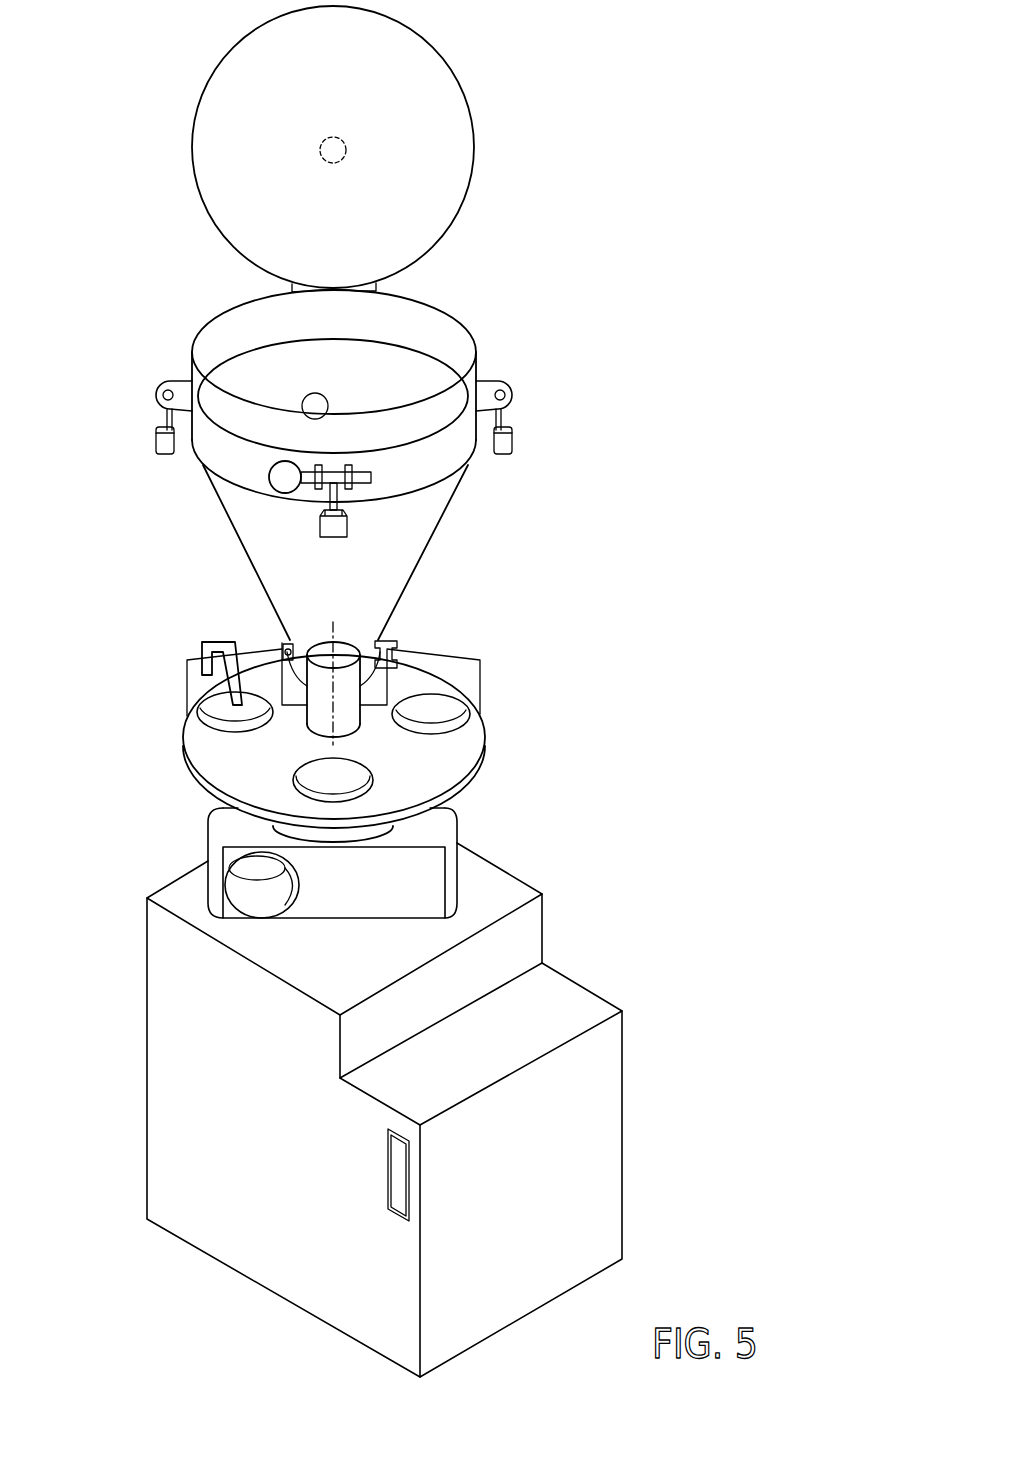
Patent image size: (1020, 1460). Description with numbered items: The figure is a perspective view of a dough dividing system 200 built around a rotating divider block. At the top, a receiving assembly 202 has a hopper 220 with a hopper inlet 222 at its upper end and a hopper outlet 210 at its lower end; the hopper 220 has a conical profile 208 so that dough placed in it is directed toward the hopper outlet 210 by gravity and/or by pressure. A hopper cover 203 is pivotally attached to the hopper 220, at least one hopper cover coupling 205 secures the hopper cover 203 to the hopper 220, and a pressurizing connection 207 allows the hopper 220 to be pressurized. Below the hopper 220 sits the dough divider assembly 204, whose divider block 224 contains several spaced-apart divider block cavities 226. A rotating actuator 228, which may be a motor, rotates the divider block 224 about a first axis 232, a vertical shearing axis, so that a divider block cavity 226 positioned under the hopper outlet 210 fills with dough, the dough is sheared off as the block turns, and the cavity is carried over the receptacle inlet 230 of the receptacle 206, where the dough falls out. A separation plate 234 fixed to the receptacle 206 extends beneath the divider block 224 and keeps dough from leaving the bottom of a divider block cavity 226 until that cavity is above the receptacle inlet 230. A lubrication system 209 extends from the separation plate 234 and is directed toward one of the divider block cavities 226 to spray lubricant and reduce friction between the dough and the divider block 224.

The dough dividing system 200 is at (667, 240).
The receiving assembly 202 is at (349, 457).
The hopper cover 203 is at (193, 149).
The dough divider assembly 204 is at (398, 733).
The hopper cover coupling 205 is at (320, 522).
The receptacle 206 is at (595, 905).
The pressurizing connection 207 is at (333, 137).
The conical profile 208 is at (420, 553).
The lubrication system 209 is at (220, 643).
The hopper outlet 210 is at (280, 641).
The hopper 220 is at (233, 497).
The hopper inlet 222 is at (248, 366).
The divider block 224 is at (450, 772).
The divider block cavity 226 is at (492, 708).
The rotating actuator 228 is at (356, 716).
The receptacle inlet 230 is at (339, 840).
The first axis 232 is at (333, 637).
The separation plate 234 is at (196, 680).